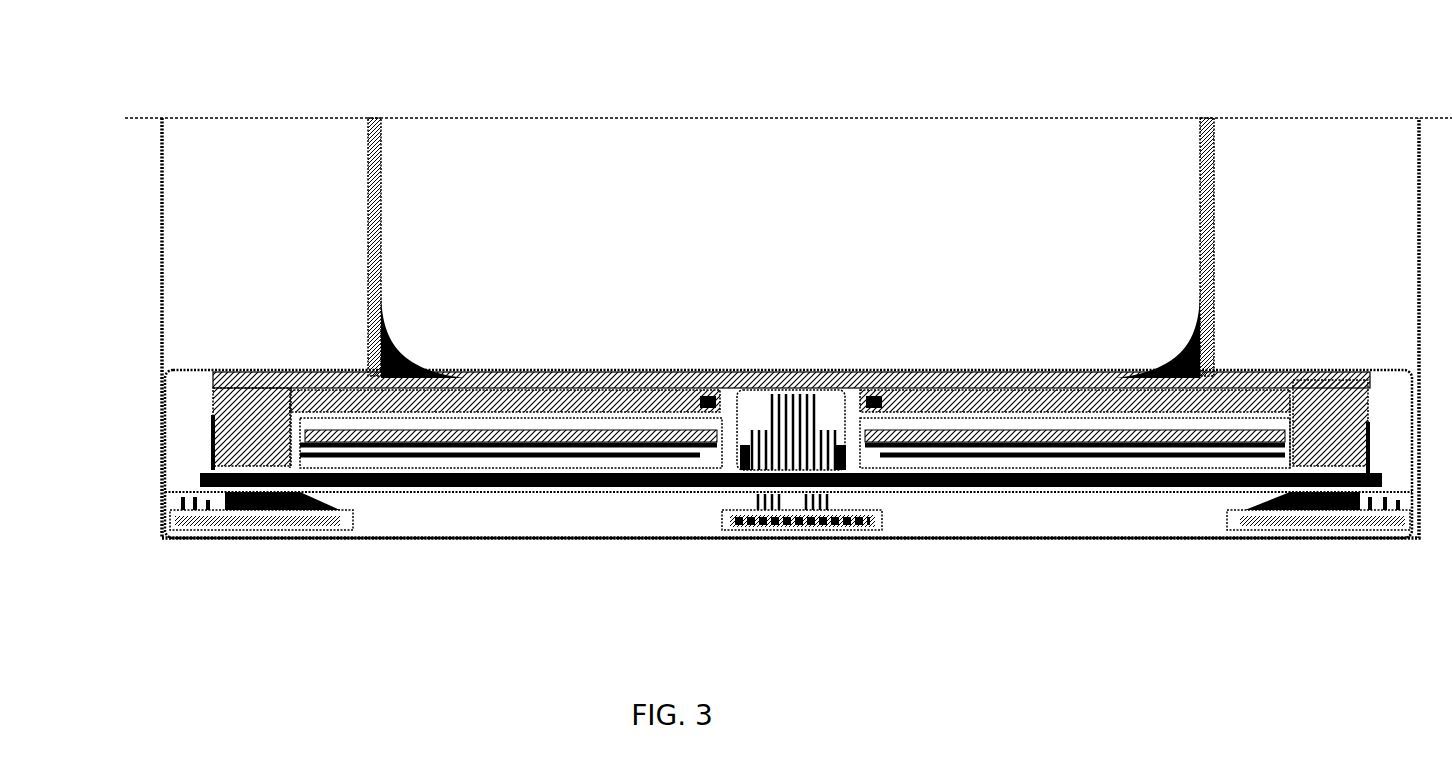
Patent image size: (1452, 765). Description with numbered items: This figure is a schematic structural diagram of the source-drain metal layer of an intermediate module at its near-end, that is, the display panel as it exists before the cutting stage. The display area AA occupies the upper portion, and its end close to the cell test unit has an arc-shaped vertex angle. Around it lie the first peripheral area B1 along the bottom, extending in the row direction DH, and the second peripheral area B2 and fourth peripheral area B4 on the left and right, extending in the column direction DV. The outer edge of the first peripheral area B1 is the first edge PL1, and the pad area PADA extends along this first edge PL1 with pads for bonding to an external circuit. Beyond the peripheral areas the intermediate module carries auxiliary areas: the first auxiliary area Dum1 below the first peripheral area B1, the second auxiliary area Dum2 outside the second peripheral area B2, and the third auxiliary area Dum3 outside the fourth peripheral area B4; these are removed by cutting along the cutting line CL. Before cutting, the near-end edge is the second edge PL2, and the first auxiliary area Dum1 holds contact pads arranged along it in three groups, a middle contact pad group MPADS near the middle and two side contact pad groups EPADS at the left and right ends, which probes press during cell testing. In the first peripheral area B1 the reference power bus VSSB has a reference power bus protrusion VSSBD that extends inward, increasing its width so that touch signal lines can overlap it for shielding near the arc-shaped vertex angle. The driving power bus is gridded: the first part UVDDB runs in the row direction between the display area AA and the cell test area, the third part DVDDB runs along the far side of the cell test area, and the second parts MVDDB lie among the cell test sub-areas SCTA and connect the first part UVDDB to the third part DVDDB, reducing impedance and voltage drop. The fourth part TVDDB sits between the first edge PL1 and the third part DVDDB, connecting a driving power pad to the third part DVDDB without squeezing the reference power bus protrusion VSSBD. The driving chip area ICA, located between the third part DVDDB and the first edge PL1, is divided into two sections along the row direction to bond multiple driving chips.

The first peripheral area B1 is at (176, 418).
The second peripheral area B2 is at (372, 118).
The fourth peripheral area B4 is at (1205, 118).
The display area AA is at (926, 128).
The row direction DH is at (692, 82).
The column direction DV is at (126, 136).
The first auxiliary area Dum1 is at (994, 535).
The second auxiliary area Dum2 is at (258, 134).
The third auxiliary area Dum3 is at (1314, 124).
The cutting line CL is at (358, 344).
The reference power bus VSSB is at (213, 452).
The reference power bus protrusion VSSBD is at (400, 372).
The second parts of the driving power bus MVDDB is at (508, 372).
The first part of the driving power bus UVDDB is at (636, 372).
The third part of the driving power bus DVDDB is at (703, 372).
The fourth part of the driving power bus TVDDB is at (770, 380).
The cell test sub-areas SCTA is at (457, 372).
The side contact pad groups EPADS is at (350, 530).
The middle contact pad group MPADS is at (876, 538).
The pad area PADA is at (525, 500).
The first edge PL1 is at (1102, 508).
The second edge PL2 is at (430, 552).
The driving chip area ICA is at (703, 472).